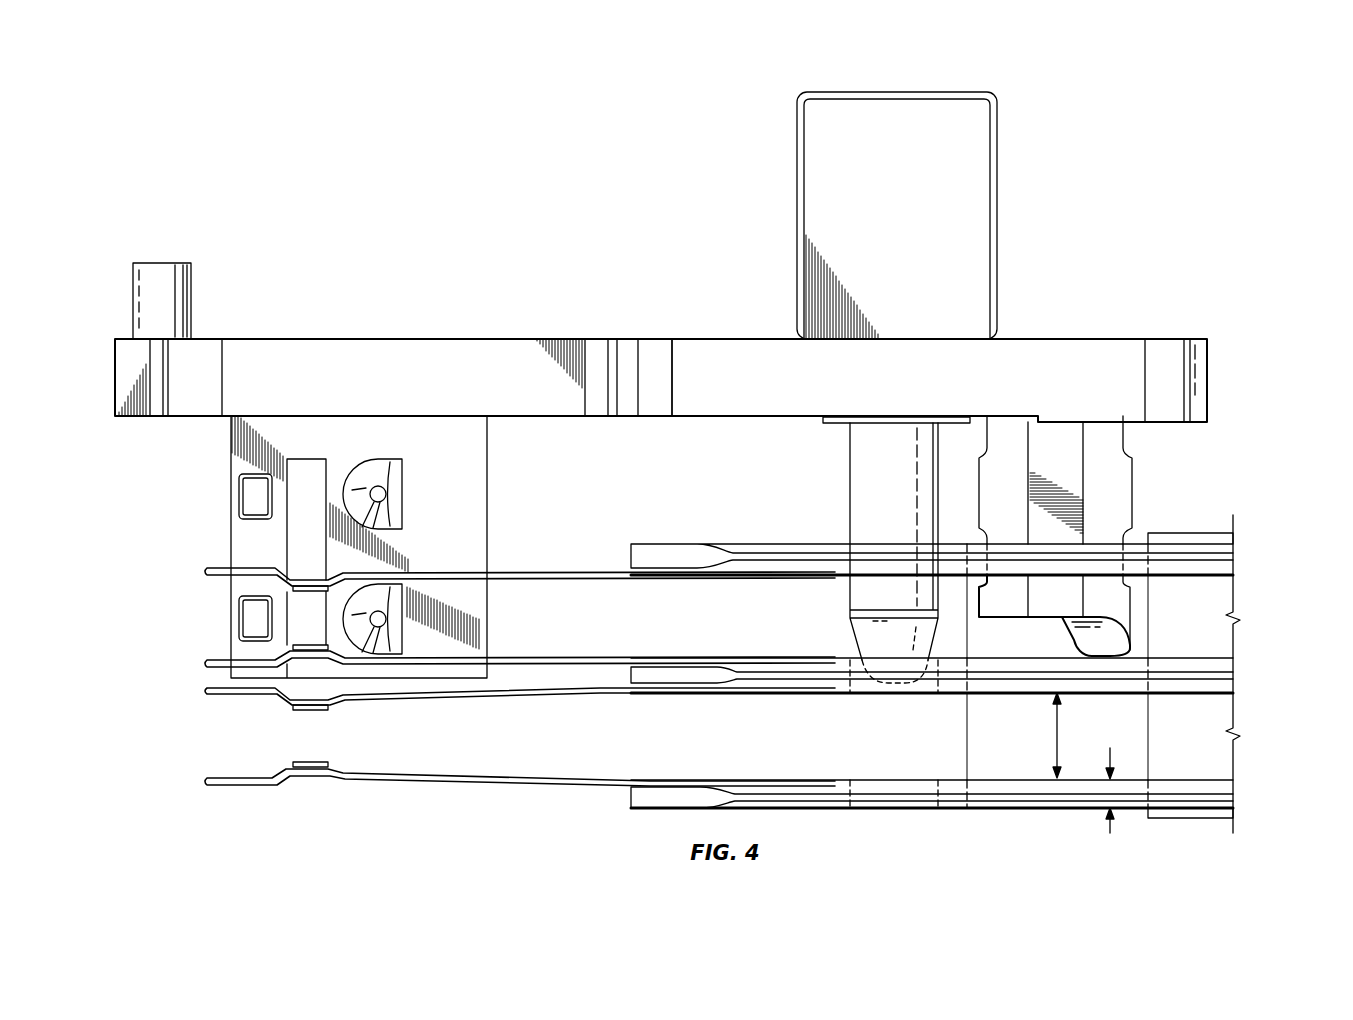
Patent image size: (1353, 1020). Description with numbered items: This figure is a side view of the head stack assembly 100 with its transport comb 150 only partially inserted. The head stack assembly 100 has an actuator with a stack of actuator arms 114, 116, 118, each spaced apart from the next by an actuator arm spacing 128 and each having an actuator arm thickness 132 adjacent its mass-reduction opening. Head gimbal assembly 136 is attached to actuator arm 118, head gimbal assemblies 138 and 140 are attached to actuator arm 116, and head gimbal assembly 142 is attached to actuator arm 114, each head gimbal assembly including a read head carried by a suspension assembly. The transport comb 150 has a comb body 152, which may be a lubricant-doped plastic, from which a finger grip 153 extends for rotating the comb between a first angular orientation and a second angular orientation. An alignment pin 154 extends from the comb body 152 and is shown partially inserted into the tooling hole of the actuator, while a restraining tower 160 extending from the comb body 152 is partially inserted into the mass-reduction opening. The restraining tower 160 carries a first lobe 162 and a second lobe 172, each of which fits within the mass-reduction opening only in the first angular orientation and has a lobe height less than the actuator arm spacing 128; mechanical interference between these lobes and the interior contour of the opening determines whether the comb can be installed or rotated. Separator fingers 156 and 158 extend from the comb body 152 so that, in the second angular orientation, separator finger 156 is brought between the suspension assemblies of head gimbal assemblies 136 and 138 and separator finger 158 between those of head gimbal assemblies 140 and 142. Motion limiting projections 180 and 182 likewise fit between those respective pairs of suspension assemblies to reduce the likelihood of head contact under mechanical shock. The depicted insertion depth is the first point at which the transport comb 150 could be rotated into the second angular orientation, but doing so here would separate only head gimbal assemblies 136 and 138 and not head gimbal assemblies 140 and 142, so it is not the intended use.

The head stack assembly 100 is at (602, 201).
The actuator arm 114 is at (1236, 790).
The actuator arm 116 is at (1236, 690).
The actuator arm 118 is at (1236, 560).
The actuator arm spacing 128 is at (1050, 735).
The actuator arm thickness 132 is at (1108, 832).
The head gimbal assembly 136 is at (680, 579).
The head gimbal assembly 138 is at (600, 656).
The head gimbal assembly 140 is at (598, 697).
The head gimbal assembly 142 is at (594, 788).
The transport comb 150 is at (496, 334).
The comb body 152 is at (714, 355).
The finger grip 153 is at (877, 222).
The alignment pin 154 is at (848, 480).
The separator finger 156 is at (405, 494).
The separator finger 158 is at (405, 630).
The restraining tower 160 is at (1117, 470).
The first lobe 162 is at (1068, 482).
The second lobe 172 is at (1058, 598).
The motion limiting projection 180 is at (238, 491).
The motion limiting projection 182 is at (238, 618).